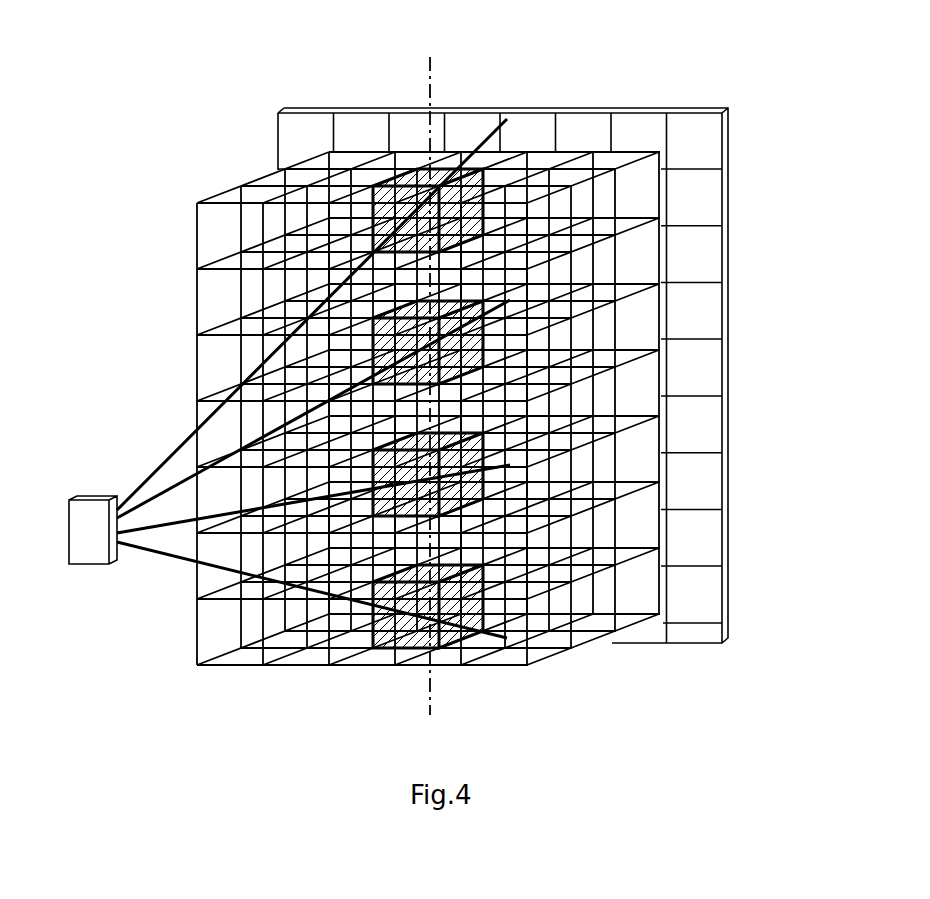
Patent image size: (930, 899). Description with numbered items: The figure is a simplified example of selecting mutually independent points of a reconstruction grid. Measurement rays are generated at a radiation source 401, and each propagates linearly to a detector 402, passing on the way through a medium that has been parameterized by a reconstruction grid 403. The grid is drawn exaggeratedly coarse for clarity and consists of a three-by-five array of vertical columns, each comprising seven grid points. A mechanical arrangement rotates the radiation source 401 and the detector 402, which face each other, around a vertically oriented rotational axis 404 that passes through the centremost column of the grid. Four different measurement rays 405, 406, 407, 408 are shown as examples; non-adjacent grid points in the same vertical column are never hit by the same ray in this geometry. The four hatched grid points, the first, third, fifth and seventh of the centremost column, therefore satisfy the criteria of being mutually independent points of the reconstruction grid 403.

The radiation source 401 is at (71, 498).
The detector 402 is at (727, 572).
The reconstruction grid 403 is at (223, 198).
The rotational axis 404 is at (432, 83).
The measurement ray 405 is at (177, 450).
The measurement ray 406 is at (163, 490).
The measurement ray 407 is at (157, 527).
The measurement ray 408 is at (183, 560).